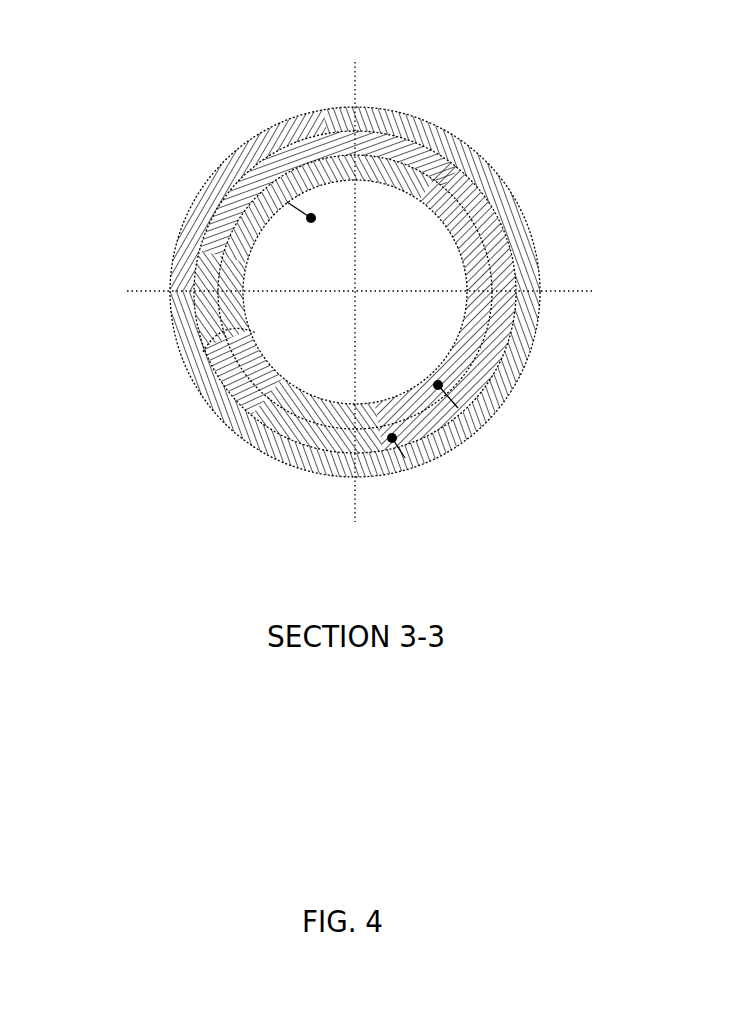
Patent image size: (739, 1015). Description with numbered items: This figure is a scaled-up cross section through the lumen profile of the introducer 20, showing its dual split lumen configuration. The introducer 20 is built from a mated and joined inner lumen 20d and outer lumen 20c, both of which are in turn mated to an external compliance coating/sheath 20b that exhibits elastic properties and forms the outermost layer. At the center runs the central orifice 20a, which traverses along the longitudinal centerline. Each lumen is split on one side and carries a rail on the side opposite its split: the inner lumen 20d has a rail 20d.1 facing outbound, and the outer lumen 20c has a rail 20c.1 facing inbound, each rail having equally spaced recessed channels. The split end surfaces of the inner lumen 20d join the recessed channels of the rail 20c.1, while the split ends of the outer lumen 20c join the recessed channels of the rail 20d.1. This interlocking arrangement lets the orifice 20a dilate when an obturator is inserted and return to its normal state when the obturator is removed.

The introducer 20 is at (393, 105).
The central orifice 20a is at (243, 147).
The external compliance coating/sheath 20b is at (313, 105).
The outer lumen 20c is at (420, 457).
The rail 20c.1 is at (472, 277).
The inner lumen 20d is at (488, 413).
The rail 20d.1 is at (180, 305).